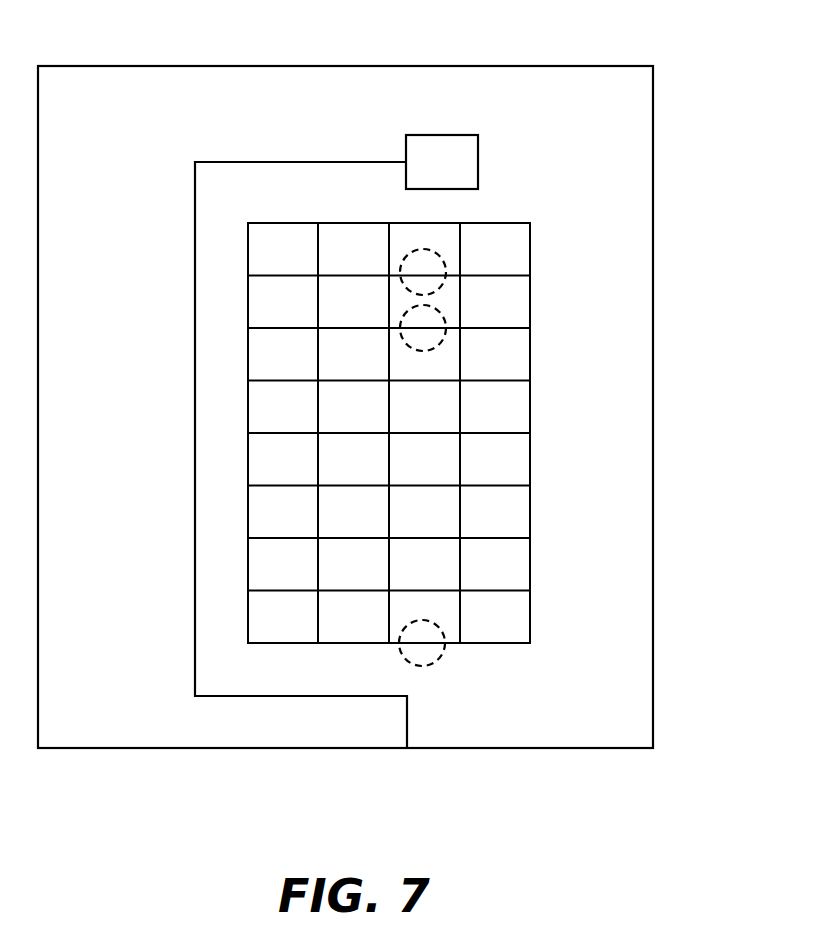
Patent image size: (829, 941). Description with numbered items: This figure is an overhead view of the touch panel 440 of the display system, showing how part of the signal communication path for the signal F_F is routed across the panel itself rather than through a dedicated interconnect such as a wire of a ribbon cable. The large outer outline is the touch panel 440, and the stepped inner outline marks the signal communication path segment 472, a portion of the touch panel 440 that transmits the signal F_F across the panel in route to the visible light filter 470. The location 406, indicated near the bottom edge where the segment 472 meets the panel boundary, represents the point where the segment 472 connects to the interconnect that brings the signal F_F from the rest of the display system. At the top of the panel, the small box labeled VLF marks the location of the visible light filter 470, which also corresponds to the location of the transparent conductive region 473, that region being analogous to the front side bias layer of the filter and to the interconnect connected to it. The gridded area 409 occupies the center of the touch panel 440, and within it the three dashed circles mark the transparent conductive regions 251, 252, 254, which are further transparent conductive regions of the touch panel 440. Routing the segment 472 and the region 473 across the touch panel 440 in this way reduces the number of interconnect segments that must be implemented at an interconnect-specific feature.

The touch panel 440 is at (613, 66).
The signal communication path segment 472 is at (167, 203).
The location 406 is at (430, 737).
The visible light filter 470 is at (483, 137).
The transparent conductive region 473 is at (452, 135).
The grid array 409 is at (514, 202).
The transparent conductive region 251 is at (447, 275).
The transparent conductive region 252 is at (447, 318).
The transparent conductive region 254 is at (442, 628).